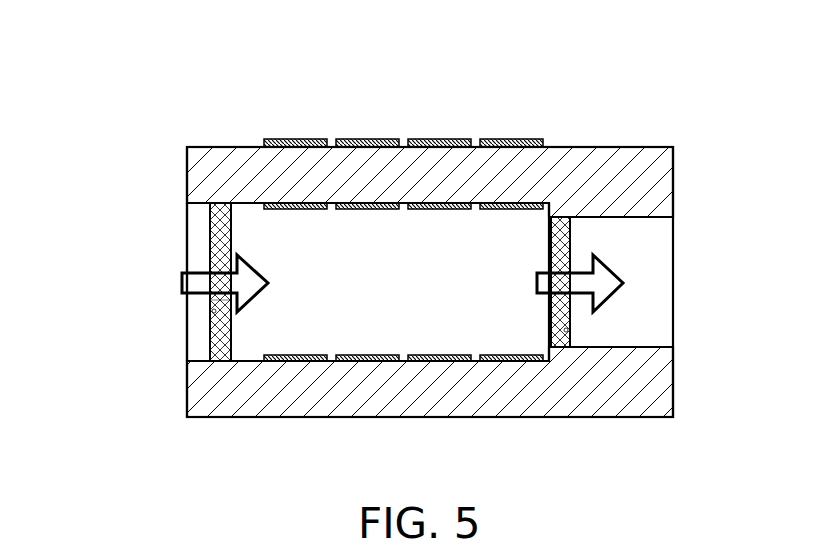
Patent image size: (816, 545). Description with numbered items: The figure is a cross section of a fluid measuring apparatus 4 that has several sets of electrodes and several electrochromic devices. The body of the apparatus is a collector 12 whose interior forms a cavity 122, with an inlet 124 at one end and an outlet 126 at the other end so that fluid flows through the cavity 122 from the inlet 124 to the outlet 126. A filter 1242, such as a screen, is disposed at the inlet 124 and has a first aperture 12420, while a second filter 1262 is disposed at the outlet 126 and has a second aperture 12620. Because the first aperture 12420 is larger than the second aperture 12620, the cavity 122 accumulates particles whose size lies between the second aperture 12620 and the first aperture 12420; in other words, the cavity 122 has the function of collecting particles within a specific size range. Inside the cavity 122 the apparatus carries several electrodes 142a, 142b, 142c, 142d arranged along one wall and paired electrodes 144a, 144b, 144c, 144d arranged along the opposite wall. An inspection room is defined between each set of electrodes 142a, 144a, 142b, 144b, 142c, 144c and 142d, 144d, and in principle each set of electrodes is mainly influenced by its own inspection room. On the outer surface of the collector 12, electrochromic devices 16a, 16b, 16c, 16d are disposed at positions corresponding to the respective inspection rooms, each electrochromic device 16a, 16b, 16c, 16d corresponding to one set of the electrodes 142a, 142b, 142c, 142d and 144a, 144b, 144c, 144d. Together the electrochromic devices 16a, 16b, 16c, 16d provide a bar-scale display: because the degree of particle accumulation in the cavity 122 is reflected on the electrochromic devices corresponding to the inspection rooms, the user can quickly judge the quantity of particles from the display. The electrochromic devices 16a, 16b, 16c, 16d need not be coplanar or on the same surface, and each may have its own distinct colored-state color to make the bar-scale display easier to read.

The fluid measuring apparatus 4 is at (718, 84).
The collector 12 is at (250, 154).
The cavity 122 is at (268, 312).
The inlet 124 is at (205, 252).
The filter 1242 is at (212, 318).
The first aperture 12420 is at (208, 311).
The outlet 126 is at (583, 238).
The filter 1262 is at (557, 232).
The second aperture 12620 is at (570, 330).
The electrochromic device 16a is at (531, 145).
The electrochromic device 16b is at (459, 145).
The electrochromic device 16c is at (387, 145).
The electrochromic device 16d is at (315, 145).
The electrode 142a is at (494, 209).
The electrode 142b is at (422, 209).
The electrode 142c is at (350, 209).
The electrode 142d is at (278, 209).
The electrode 144a is at (536, 322).
The electrode 144b is at (421, 354).
The electrode 144c is at (349, 354).
The electrode 144d is at (277, 354).